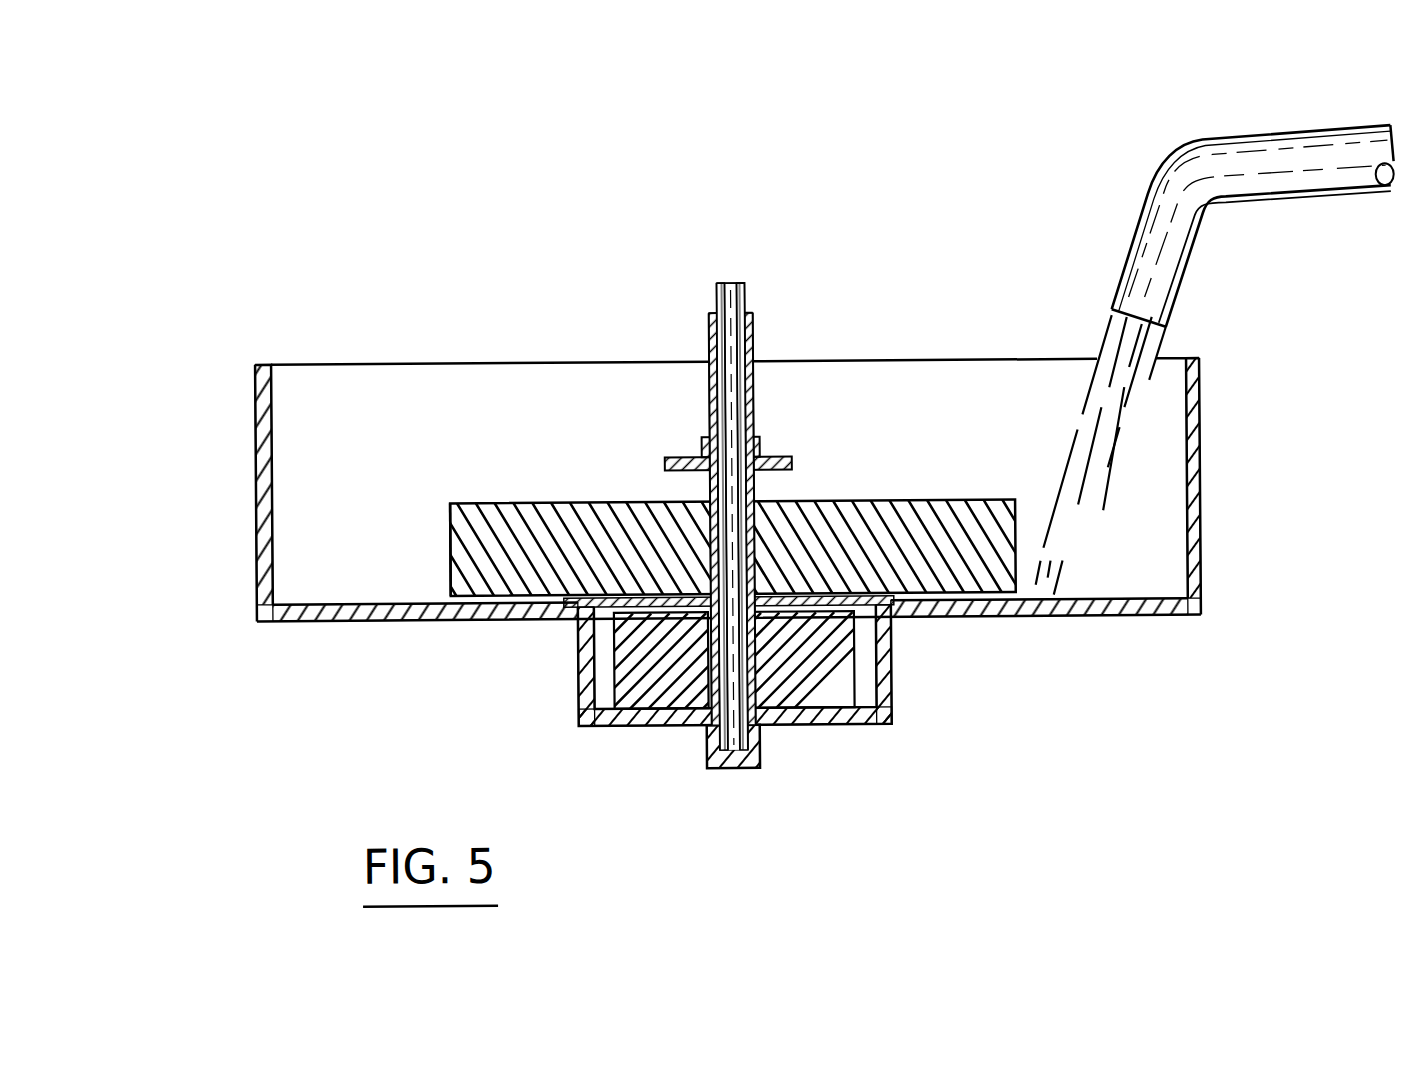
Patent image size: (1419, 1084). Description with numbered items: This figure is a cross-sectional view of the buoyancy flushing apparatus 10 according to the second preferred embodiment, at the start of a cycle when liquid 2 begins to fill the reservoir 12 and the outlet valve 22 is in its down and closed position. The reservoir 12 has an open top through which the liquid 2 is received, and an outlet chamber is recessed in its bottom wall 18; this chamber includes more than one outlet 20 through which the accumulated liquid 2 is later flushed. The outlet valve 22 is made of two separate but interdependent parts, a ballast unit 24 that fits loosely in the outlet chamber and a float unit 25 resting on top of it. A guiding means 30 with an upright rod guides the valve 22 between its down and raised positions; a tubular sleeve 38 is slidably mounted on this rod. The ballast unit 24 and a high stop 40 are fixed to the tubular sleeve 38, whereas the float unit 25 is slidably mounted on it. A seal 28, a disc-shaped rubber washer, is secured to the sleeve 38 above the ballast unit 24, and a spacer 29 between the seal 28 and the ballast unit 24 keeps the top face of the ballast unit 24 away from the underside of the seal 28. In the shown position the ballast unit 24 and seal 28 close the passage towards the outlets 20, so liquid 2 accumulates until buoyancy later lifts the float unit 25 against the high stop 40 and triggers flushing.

The buoyancy flushing apparatus 10 is at (391, 224).
The reservoir 12 is at (243, 428).
The bottom wall 18 is at (1130, 621).
The outlet valve 22 is at (556, 488).
The float unit 25 is at (450, 551).
The seal 28 is at (893, 638).
The outlet 20 is at (577, 679).
The ballast unit 24 is at (655, 700).
The spacer 29 is at (797, 710).
The high stop 40 is at (780, 455).
The tubular sleeve 38 is at (710, 335).
The guiding means 30 is at (732, 283).
The liquid 2 is at (1120, 408).